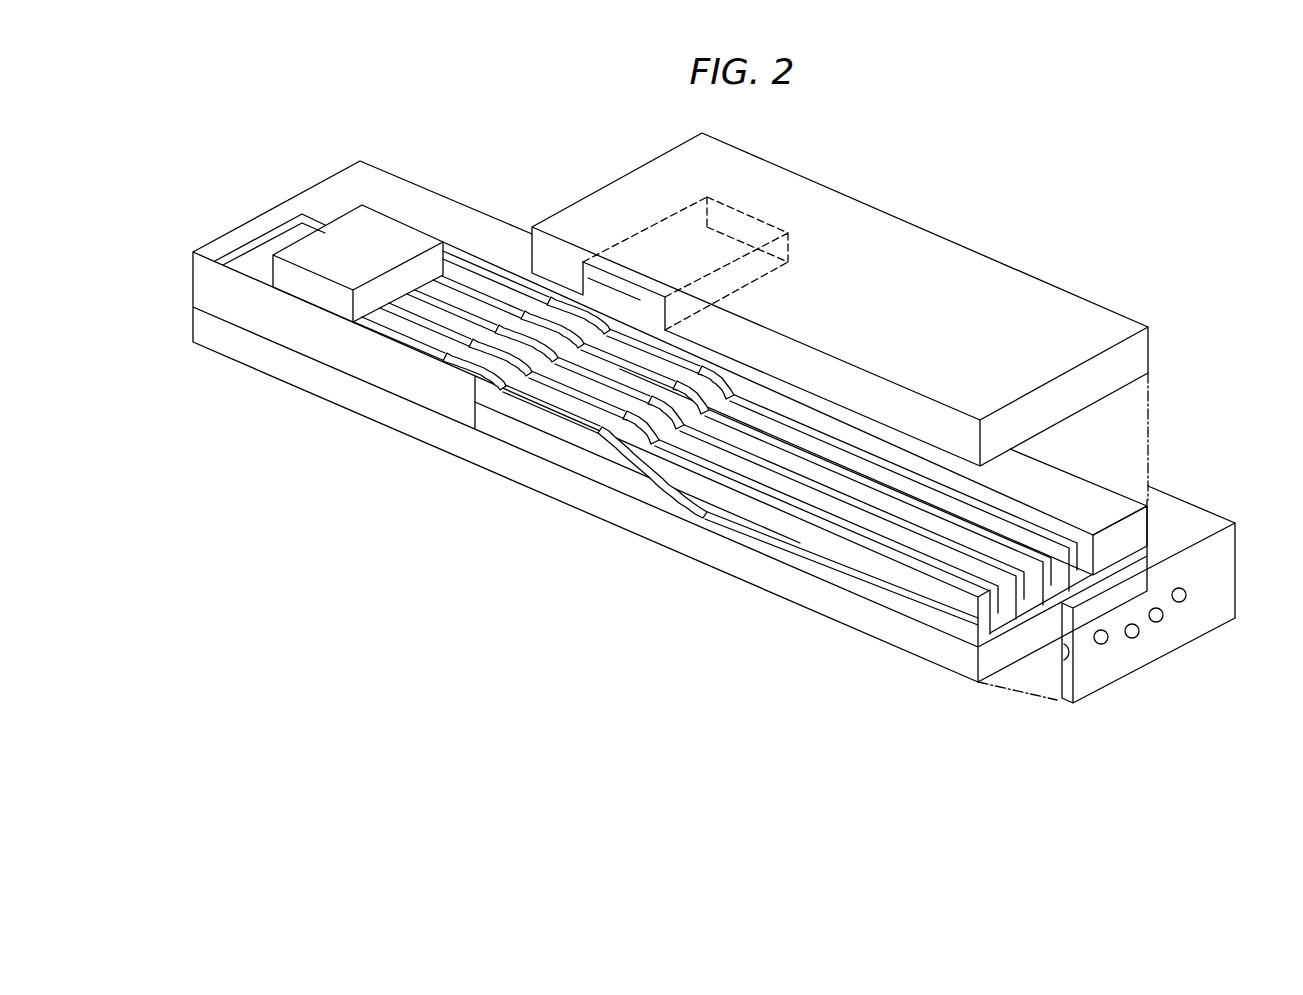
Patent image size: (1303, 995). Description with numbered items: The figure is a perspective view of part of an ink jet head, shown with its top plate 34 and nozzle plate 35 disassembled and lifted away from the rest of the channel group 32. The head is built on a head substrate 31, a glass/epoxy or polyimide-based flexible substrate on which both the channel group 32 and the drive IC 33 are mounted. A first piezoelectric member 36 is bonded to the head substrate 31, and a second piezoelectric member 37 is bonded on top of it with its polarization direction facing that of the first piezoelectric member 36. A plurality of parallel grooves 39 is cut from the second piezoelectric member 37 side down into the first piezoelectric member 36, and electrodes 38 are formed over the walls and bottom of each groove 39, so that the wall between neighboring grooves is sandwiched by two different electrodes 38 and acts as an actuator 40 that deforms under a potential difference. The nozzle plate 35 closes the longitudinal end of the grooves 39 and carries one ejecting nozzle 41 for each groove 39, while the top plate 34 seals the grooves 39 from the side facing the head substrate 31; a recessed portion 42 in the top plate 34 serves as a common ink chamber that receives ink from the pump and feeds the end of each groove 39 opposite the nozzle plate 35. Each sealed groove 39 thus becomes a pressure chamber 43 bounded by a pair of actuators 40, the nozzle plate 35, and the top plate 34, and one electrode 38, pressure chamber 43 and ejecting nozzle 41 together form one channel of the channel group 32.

The head substrate 31 is at (495, 458).
The channel group 32 is at (1013, 686).
The drive IC 33 is at (375, 222).
The top plate 34 is at (1063, 308).
The nozzle plate 35 is at (1222, 552).
The first piezoelectric member 36 is at (1150, 545).
The second piezoelectric member 37 is at (1140, 535).
The electrodes 38 is at (890, 533).
The grooves 39 is at (1030, 608).
The actuator 40 is at (985, 612).
The ejecting nozzles 41 is at (1179, 602).
The recessed portion 42 is at (745, 208).
The pressure chamber 43 is at (1030, 575).